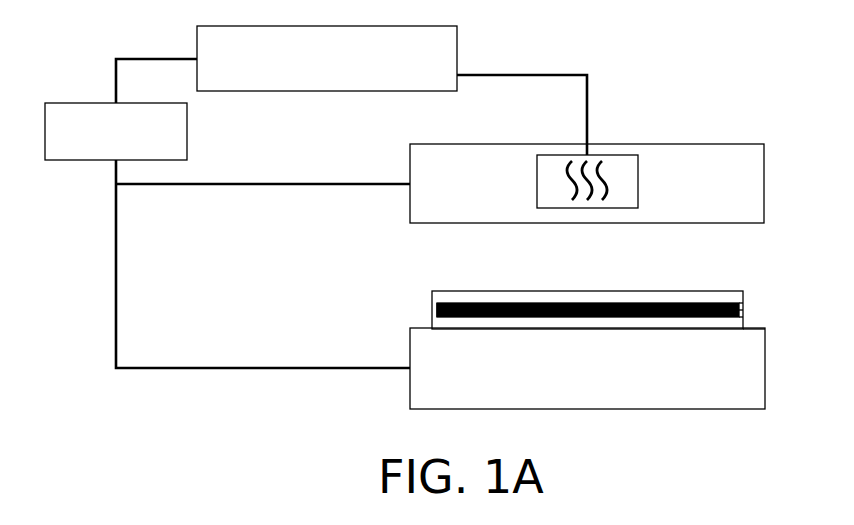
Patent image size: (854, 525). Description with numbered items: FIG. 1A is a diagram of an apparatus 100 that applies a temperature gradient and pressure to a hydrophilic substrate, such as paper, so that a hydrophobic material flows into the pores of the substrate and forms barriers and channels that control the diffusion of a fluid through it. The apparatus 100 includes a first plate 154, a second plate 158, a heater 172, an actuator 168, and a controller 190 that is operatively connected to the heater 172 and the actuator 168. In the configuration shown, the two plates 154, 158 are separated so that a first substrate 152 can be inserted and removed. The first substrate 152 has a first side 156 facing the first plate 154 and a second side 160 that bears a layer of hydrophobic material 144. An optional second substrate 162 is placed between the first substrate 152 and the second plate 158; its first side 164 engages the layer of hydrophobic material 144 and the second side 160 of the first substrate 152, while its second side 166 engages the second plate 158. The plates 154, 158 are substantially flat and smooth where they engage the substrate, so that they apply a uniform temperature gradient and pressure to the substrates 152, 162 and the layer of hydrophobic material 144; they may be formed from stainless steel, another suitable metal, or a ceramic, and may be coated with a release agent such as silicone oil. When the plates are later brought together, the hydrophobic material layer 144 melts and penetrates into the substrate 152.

The apparatus 100 is at (648, 45).
The controller 190 is at (325, 91).
The actuator 168 is at (187, 133).
The first plate 154 is at (667, 144).
The heater 172 is at (563, 155).
The first side 156 is at (450, 291).
The first substrate 152 is at (432, 298).
The second side 160 is at (436, 307).
The layer of hydrophobic material 144 is at (743, 305).
The first side 164 is at (745, 310).
The second substrate 162 is at (745, 318).
The second side 166 is at (735, 330).
The second plate 158 is at (595, 410).